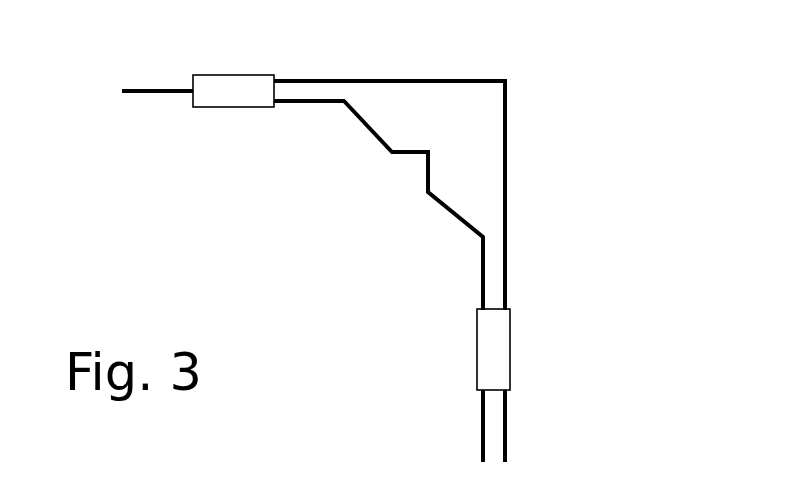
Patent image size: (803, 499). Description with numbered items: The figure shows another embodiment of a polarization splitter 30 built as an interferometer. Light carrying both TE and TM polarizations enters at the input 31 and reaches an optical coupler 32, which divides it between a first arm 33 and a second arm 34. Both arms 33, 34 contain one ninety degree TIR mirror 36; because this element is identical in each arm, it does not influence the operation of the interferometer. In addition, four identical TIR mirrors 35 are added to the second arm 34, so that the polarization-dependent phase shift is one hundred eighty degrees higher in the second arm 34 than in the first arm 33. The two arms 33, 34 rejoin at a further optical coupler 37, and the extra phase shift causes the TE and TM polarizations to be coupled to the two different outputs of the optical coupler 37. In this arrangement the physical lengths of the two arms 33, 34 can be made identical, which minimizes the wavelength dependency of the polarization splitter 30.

The polarization splitter 30 is at (346, 234).
The input 31 is at (160, 108).
The optical coupler 32 is at (238, 93).
The first arm 33 is at (505, 123).
The second arm 34 is at (312, 100).
The TIR mirrors 35 is at (345, 103).
The 90 degree TIR mirror 36 is at (420, 137).
The optical coupler 37 is at (498, 367).